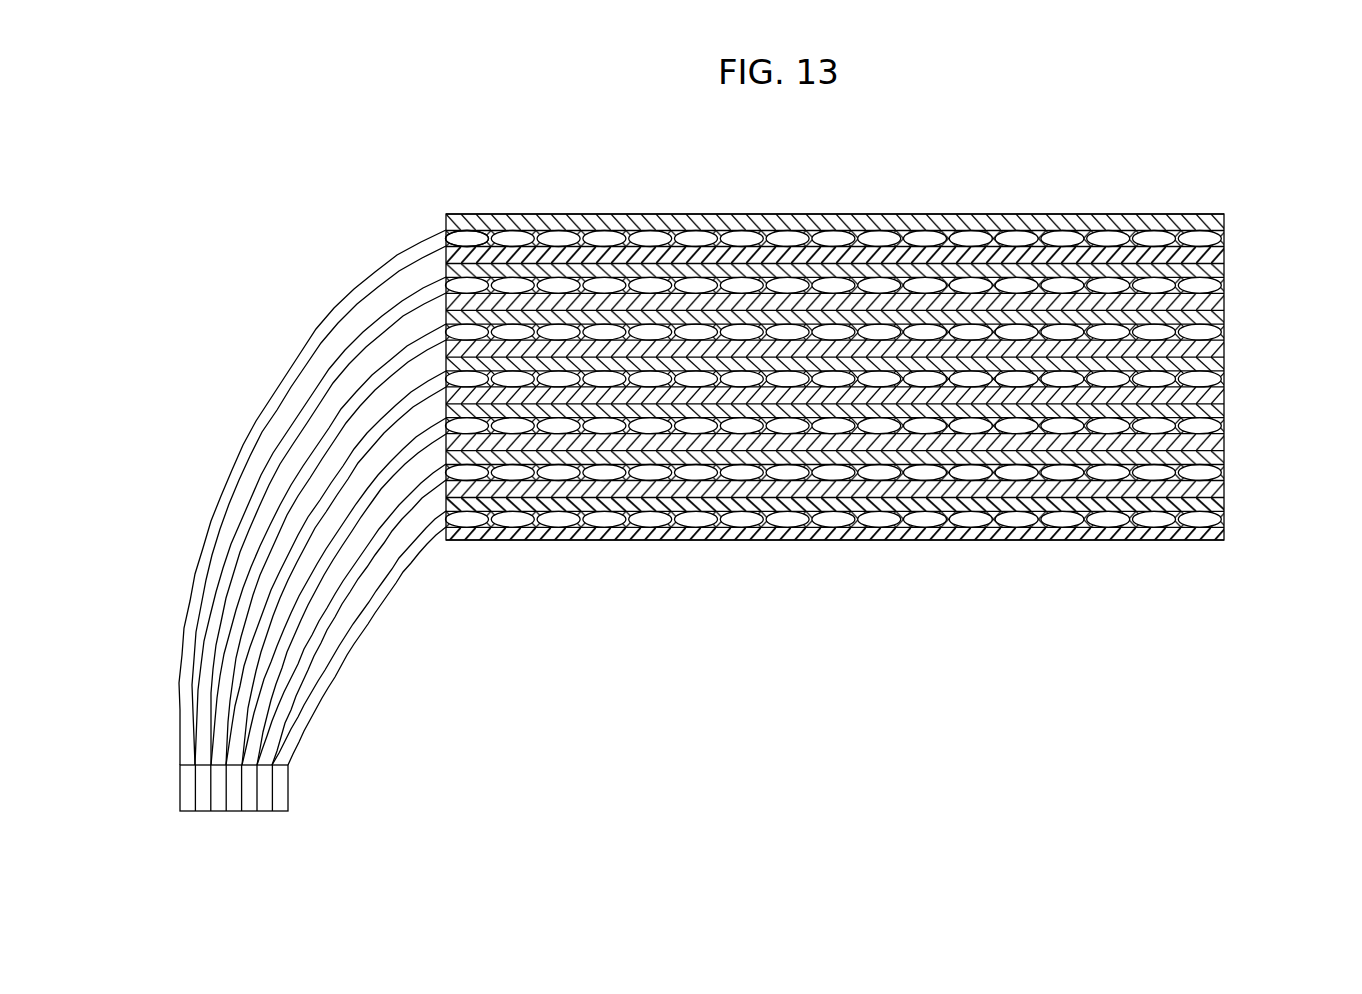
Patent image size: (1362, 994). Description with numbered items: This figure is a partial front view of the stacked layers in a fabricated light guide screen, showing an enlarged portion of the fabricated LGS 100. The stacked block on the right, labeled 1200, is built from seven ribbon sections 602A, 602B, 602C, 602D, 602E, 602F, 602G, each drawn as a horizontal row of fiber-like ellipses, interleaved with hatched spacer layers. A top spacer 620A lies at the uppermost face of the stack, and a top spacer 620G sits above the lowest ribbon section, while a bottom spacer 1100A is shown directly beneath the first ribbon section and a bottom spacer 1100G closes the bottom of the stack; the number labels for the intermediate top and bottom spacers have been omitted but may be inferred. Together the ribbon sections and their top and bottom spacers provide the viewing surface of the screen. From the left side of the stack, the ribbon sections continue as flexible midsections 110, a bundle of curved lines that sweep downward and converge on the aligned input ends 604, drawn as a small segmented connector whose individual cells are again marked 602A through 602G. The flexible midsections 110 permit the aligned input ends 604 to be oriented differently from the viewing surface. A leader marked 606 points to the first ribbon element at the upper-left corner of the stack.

The fabricated light guide screen 100 is at (1180, 149).
The flexible midsections 110 is at (272, 358).
The aligned input ends 604 is at (310, 788).
The fiber / conductor 606 is at (488, 238).
The layered block 1200 is at (950, 197).
The top spacer 620A is at (1224, 214).
The top spacer 620G is at (1218, 500).
The bottom spacer 1100A is at (1216, 254).
The bottom spacer 1100G is at (1216, 530).
The ribbon section 602A is at (1236, 233).
The ribbon section 602B is at (1236, 281).
The ribbon section 602C is at (1236, 327).
The ribbon section 602D is at (1236, 372).
The ribbon section 602E is at (1236, 419).
The ribbon section 602F is at (1236, 465).
The ribbon section 602G is at (1236, 511).